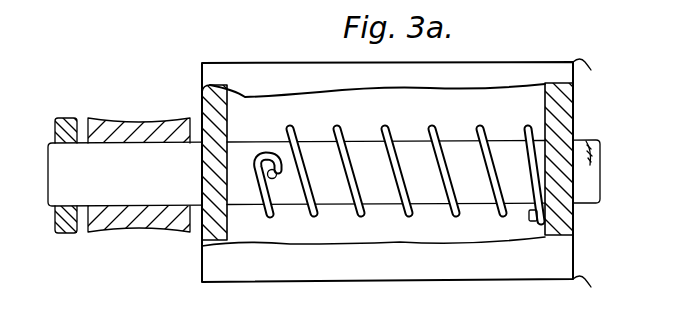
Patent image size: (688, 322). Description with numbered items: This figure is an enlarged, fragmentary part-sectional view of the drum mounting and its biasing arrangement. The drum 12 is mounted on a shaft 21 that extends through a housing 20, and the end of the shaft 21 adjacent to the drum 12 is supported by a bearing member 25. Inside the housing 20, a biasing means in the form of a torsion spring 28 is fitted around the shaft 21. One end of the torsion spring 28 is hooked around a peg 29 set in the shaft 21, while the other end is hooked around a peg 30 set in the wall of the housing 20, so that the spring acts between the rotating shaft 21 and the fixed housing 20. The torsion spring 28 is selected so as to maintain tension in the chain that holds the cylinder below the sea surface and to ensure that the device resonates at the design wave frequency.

The drum 12 is at (151, 119).
The housing 20 is at (501, 62).
The shaft 21 is at (130, 177).
The bearing member 25 is at (62, 118).
The torsion spring 28 is at (347, 130).
The peg 29 is at (277, 178).
The peg 30 is at (528, 216).